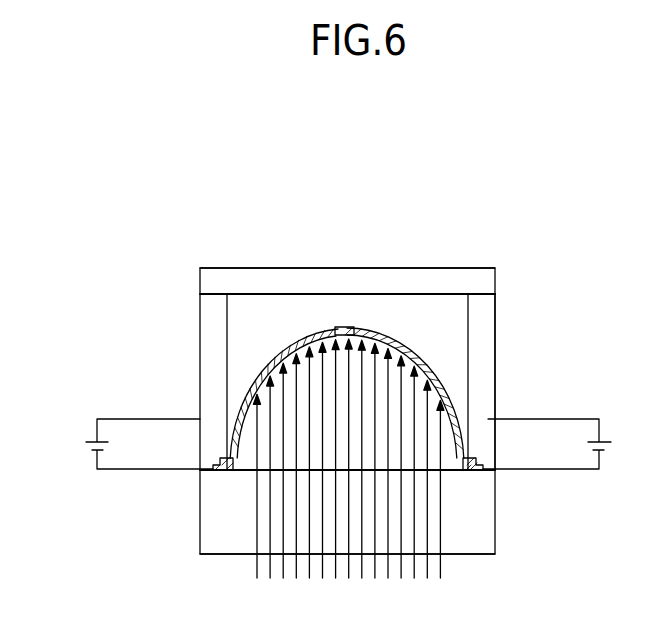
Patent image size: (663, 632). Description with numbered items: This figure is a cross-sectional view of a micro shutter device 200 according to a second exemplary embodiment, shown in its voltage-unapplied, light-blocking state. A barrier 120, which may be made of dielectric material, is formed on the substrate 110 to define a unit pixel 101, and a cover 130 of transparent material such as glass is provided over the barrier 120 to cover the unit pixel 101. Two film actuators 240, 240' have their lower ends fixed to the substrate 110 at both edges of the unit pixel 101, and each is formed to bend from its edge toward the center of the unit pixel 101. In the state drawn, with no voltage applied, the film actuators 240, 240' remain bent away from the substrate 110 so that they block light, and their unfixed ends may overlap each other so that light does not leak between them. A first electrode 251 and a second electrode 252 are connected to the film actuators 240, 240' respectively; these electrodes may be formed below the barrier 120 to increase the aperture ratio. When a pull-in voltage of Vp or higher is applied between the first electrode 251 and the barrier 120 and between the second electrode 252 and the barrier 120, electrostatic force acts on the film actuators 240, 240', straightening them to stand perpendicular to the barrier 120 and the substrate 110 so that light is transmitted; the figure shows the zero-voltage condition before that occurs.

The micro shutter device 200 is at (158, 227).
The unit pixel 101 is at (274, 311).
The cover 130 is at (442, 277).
The film actuator 240 is at (453, 379).
The film actuator 240' is at (226, 391).
The barrier 120 is at (490, 382).
The substrate 110 is at (488, 513).
The second electrode 252 is at (215, 471).
The first electrode 251 is at (468, 471).